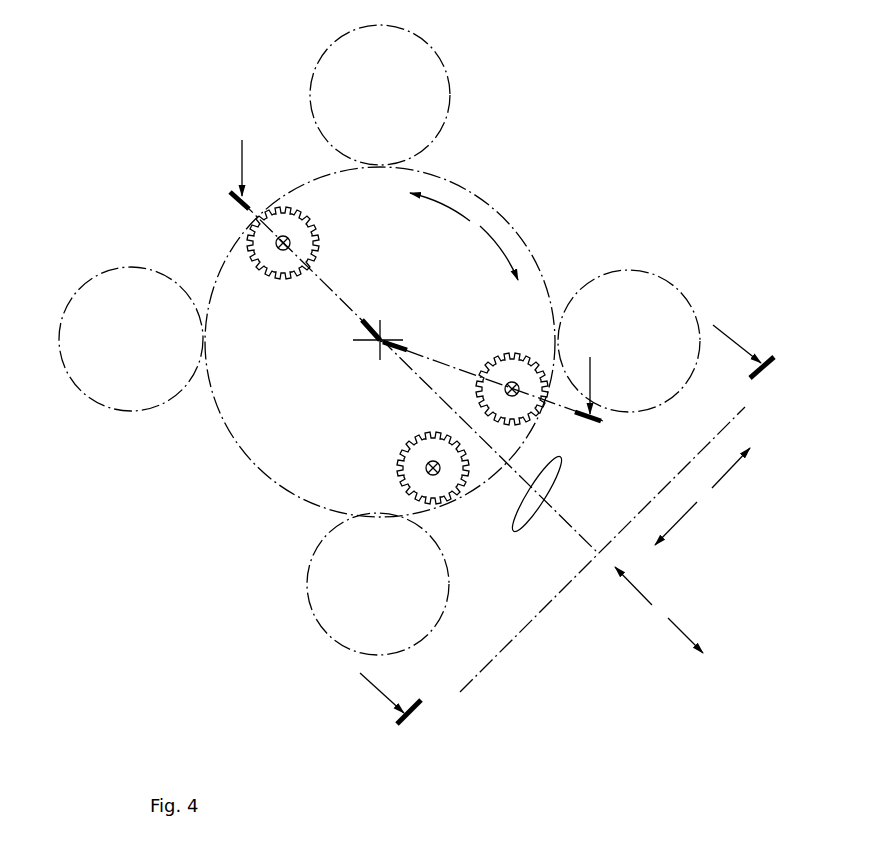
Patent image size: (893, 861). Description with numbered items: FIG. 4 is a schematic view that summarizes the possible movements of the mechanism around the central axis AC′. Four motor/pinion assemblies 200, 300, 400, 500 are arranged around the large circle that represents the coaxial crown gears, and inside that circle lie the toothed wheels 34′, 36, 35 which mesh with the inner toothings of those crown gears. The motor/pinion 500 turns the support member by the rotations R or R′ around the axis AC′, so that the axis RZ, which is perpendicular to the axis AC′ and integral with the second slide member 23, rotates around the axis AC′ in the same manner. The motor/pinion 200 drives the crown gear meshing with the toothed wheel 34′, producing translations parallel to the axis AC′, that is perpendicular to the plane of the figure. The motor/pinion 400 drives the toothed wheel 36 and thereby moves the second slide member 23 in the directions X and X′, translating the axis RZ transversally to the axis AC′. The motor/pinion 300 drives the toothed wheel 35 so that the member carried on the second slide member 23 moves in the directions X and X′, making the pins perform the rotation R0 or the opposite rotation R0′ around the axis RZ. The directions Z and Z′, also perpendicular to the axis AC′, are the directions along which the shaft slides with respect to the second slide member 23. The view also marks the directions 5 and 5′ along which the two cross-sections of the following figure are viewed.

The motor/pinion 200 is at (415, 90).
The motor/pinion 300 is at (640, 300).
The motor/pinion 400 is at (102, 375).
The motor/pinion assembly 500 is at (332, 603).
The toothed wheel 34′ is at (267, 247).
The toothed wheel 35 is at (413, 469).
The toothed wheel 36 is at (517, 370).
The axis AC′ is at (373, 343).
The direction 5- 5 is at (242, 158).
The direction 5'-5' 5′ is at (728, 335).
The second slide member 23 is at (527, 627).
The rotation R is at (500, 245).
The opposite rotation R′ is at (452, 207).
The axis RZ is at (562, 522).
The rotation R0 is at (522, 499).
The opposite rotation R0′ is at (563, 497).
The direction X is at (725, 475).
The opposite direction X′ is at (682, 517).
The direction Z is at (638, 593).
The opposite direction Z′ is at (680, 630).